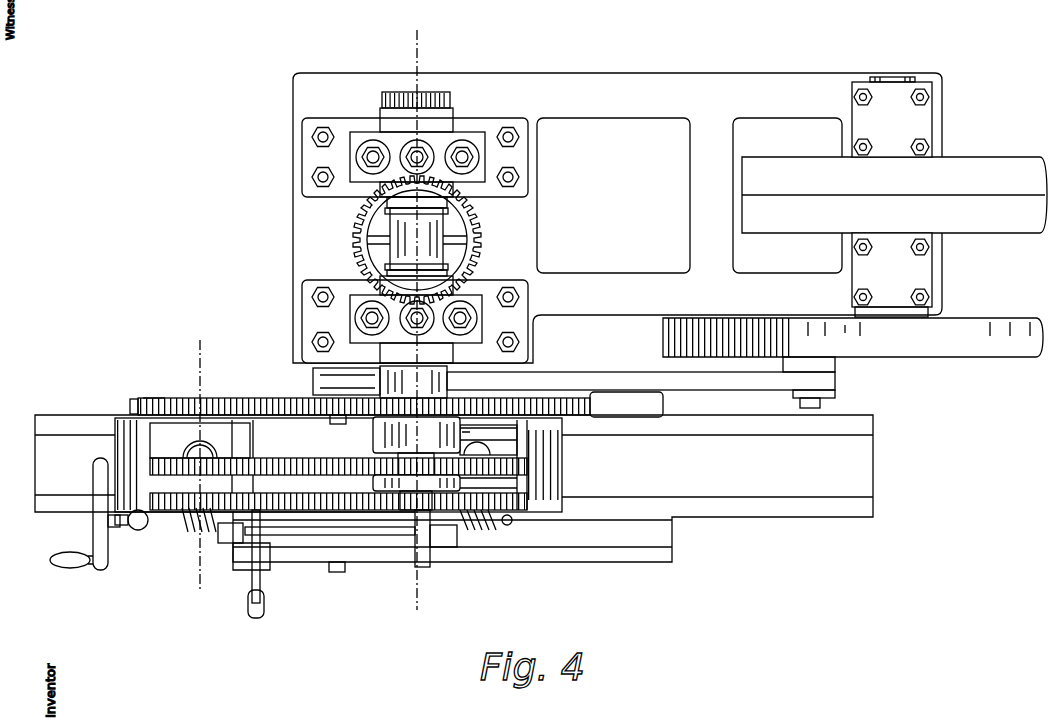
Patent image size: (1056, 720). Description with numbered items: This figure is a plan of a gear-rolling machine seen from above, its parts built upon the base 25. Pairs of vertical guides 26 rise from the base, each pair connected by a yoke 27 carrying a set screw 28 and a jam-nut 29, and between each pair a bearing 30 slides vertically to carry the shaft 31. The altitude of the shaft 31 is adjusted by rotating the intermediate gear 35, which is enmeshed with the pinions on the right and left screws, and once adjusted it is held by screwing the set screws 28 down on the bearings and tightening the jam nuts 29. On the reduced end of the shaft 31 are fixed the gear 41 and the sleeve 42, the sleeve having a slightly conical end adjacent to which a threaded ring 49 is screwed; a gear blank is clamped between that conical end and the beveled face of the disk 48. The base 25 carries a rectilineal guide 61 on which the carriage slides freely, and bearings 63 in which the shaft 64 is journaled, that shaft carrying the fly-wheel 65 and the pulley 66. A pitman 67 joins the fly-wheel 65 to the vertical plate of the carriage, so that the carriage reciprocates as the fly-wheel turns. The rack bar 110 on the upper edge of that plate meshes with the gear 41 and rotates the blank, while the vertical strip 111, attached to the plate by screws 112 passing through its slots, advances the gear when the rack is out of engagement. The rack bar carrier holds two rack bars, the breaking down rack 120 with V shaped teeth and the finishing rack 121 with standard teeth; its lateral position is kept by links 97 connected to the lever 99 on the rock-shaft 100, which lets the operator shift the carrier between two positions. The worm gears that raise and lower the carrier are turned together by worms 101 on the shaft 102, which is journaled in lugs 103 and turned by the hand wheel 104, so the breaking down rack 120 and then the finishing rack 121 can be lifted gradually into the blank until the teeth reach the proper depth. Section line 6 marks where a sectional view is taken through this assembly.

The section line 6- 6 is at (434, 48).
The base 25 is at (353, 107).
The vertical guides 26 is at (360, 293).
The yoke 27 is at (360, 143).
The set screw 28 is at (408, 147).
The jam-nut 29 is at (432, 143).
The bearing 30 is at (352, 248).
The shaft 31 is at (423, 92).
The intermediate gear 35 is at (462, 240).
The gear 41 is at (377, 410).
The sleeve 42 is at (430, 433).
The disk 48 is at (430, 480).
The threaded ring 49 is at (360, 476).
The rectilineal guide 61 is at (707, 480).
The bearings 63 is at (910, 117).
The shaft 64 is at (905, 79).
The fly-wheel 65 is at (963, 340).
The pulley 66 is at (945, 178).
The pitman 67 is at (645, 380).
The links 97 is at (257, 533).
The lever 99 is at (263, 573).
The rock-shaft 100 is at (410, 537).
The worms 101 is at (193, 533).
The shaft 102 is at (112, 523).
The lugs 103 is at (173, 518).
The hand wheel 104 is at (102, 543).
The rack bar 110 is at (193, 397).
The vertical strip 111 is at (143, 397).
The screws 112 is at (140, 402).
The breaking down rack 120 is at (256, 460).
The finishing rack 121 is at (250, 485).